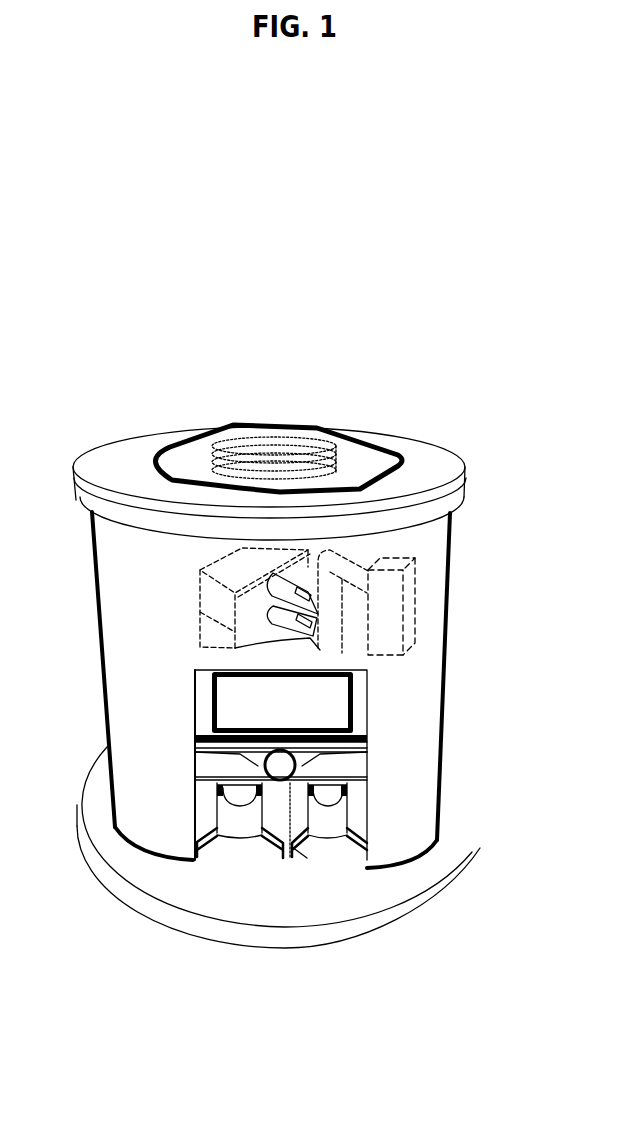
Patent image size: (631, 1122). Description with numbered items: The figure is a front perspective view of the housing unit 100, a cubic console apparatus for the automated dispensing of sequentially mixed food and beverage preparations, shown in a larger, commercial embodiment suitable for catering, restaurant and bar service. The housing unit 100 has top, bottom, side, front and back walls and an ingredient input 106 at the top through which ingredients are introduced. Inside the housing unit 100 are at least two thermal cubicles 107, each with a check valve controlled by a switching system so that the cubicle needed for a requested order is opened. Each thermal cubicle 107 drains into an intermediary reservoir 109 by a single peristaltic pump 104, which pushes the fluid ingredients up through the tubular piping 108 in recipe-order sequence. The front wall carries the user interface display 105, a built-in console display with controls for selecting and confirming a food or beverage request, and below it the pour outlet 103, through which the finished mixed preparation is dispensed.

The housing unit 100 is at (433, 843).
The pour outlet 103 is at (337, 823).
The peristaltic pump 104 is at (220, 653).
The user interface display 105 is at (340, 705).
The ingredient input 106 is at (295, 443).
The thermal cubicle 107 is at (197, 580).
The tubular piping 108 is at (345, 552).
The intermediary reservoir 109 is at (422, 598).